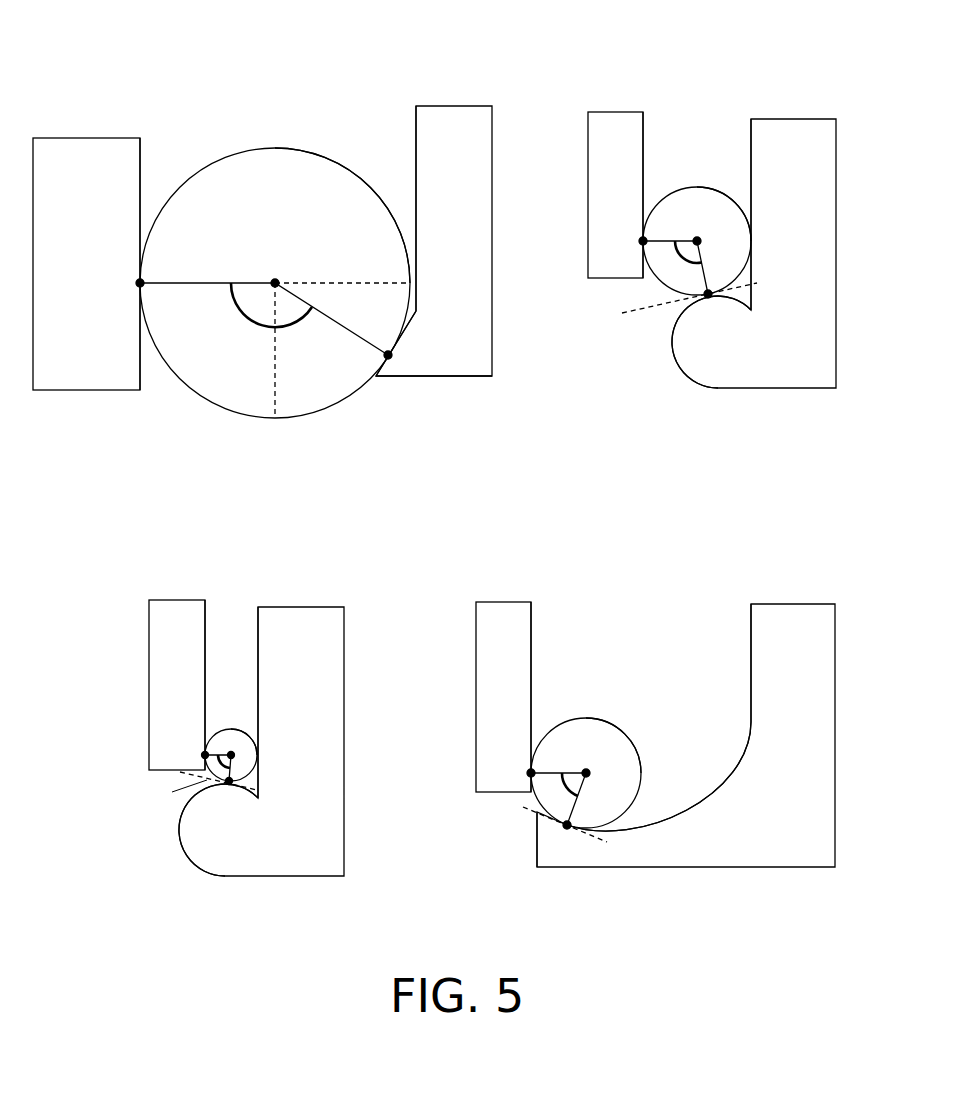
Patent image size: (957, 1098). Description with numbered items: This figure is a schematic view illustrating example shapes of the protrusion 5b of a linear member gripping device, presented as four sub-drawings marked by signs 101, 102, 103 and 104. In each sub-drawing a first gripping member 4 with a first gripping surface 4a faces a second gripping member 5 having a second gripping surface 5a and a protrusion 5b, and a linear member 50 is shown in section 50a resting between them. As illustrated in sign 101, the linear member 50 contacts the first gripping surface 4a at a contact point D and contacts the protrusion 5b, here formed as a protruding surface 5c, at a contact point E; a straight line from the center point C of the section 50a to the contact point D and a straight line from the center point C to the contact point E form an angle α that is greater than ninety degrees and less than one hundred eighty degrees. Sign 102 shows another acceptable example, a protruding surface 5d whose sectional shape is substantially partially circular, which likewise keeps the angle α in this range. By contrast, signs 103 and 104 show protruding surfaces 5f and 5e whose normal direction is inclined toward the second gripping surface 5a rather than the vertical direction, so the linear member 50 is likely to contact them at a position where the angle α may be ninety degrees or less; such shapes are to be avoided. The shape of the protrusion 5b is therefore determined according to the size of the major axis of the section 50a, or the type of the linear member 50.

The first gripping member 4 is at (87, 149).
The first gripping surface 4a is at (140, 158).
The second gripping member 5 is at (455, 114).
The second gripping surface 5a is at (416, 129).
The protrusion 5b is at (410, 363).
The protruding surface 5c is at (400, 335).
The protruding surface 5d is at (672, 328).
The protruding surface 5e is at (612, 828).
The protruding surface 5f is at (180, 825).
The linear member 50 is at (289, 129).
The section of the linear member 50a is at (344, 169).
The sign 101 is at (108, 57).
The sign 102 is at (590, 57).
The sign 103 is at (140, 548).
The sign 104 is at (473, 548).